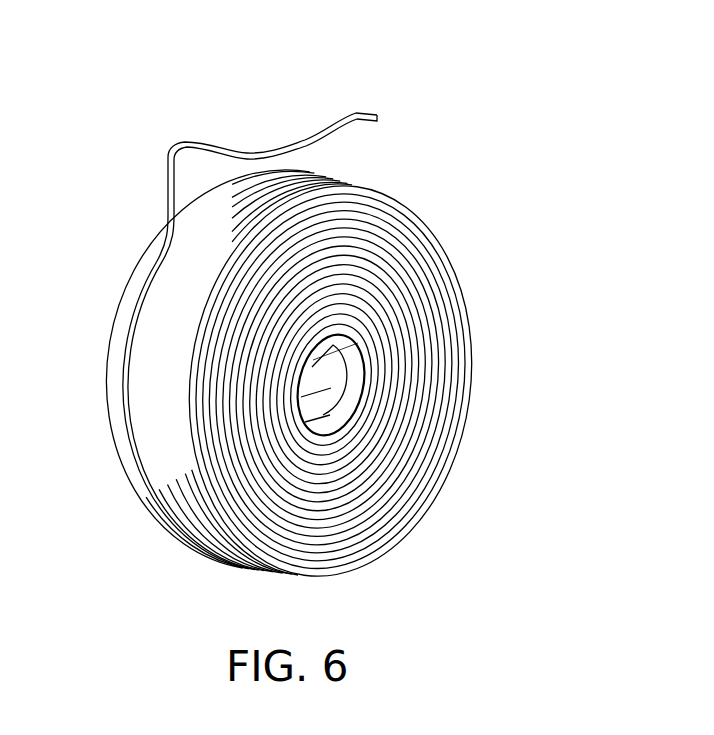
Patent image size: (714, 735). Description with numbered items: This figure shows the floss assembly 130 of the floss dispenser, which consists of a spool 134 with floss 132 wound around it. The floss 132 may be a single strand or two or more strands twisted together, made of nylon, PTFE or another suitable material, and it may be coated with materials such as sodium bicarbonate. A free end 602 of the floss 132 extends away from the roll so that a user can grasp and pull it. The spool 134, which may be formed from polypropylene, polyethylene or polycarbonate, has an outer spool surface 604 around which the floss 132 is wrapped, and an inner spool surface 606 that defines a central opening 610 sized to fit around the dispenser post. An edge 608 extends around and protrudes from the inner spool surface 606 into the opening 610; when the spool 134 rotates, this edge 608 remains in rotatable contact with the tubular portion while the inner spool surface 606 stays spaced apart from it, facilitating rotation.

The floss assembly 130 is at (150, 73).
The floss 132 is at (148, 477).
The spool 134 is at (386, 380).
The free end 602 is at (353, 111).
The outer spool surface 604 is at (356, 331).
The inner spool surface 606 is at (345, 432).
The edge 608 is at (342, 396).
The opening 610 is at (328, 387).